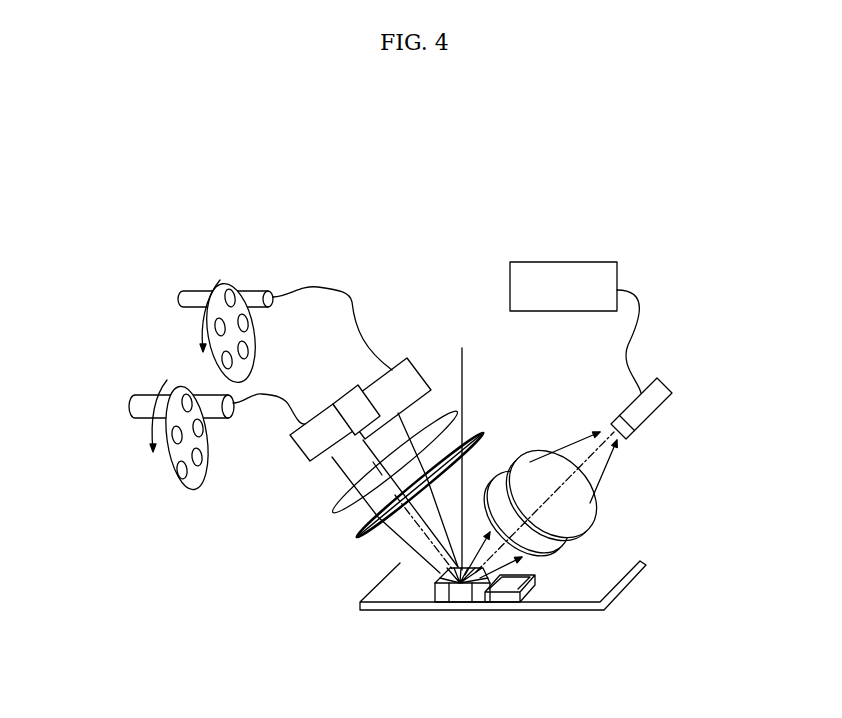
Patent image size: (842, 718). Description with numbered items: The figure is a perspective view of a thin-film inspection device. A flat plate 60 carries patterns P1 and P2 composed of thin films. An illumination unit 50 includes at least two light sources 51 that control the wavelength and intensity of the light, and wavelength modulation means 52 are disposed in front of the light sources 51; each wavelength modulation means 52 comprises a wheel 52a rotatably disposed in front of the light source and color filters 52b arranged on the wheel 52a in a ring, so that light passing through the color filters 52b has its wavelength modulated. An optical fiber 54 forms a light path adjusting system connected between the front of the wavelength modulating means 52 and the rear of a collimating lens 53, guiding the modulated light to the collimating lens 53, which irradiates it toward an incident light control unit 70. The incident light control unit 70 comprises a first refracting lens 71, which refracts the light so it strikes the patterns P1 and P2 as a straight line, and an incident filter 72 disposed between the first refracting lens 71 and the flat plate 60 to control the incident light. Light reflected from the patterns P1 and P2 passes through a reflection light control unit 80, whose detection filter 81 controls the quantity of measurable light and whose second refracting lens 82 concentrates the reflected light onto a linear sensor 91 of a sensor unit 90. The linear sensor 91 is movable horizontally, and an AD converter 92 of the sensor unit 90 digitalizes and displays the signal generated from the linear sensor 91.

The illumination unit 50 is at (165, 475).
The light source 51 is at (135, 407).
The wavelength modulation means 52 is at (187, 475).
The wheel 52a is at (197, 475).
The color filter 52b is at (161, 493).
The collimating lens 53 is at (312, 460).
The optical fiber 54 is at (352, 302).
The flat plate 60 is at (572, 612).
The incident light control unit 70 is at (368, 522).
The first refracting lens 71 is at (336, 514).
The incident filter 72 is at (414, 505).
The reflection light control unit 80 is at (602, 517).
The detection filter 81 is at (560, 545).
The second refracting lens 82 is at (582, 508).
The sensor unit 90 is at (654, 359).
The linear sensor 91 is at (657, 409).
The AD converter 92 is at (617, 266).
The pattern P1 is at (458, 602).
The pattern P2 is at (503, 602).